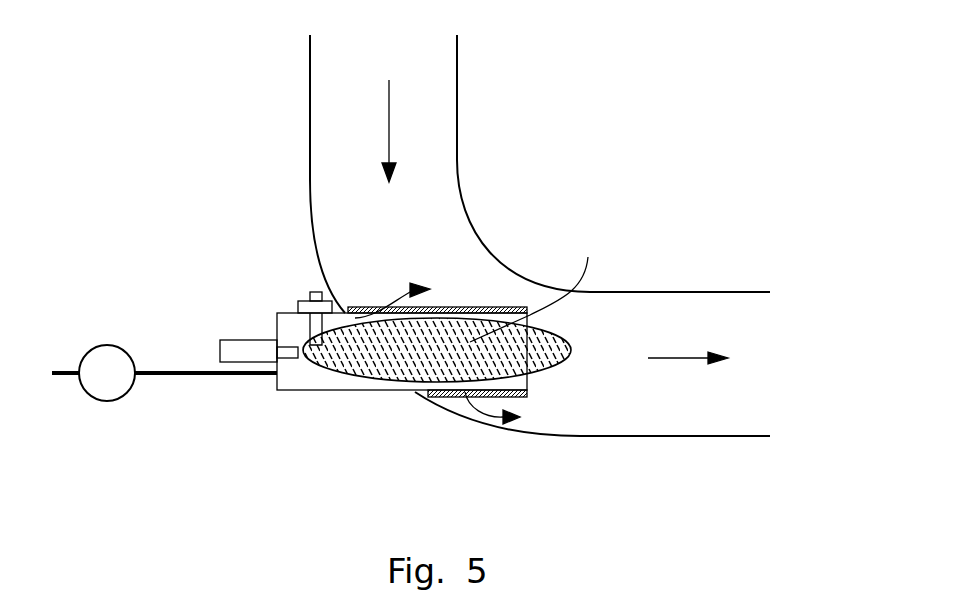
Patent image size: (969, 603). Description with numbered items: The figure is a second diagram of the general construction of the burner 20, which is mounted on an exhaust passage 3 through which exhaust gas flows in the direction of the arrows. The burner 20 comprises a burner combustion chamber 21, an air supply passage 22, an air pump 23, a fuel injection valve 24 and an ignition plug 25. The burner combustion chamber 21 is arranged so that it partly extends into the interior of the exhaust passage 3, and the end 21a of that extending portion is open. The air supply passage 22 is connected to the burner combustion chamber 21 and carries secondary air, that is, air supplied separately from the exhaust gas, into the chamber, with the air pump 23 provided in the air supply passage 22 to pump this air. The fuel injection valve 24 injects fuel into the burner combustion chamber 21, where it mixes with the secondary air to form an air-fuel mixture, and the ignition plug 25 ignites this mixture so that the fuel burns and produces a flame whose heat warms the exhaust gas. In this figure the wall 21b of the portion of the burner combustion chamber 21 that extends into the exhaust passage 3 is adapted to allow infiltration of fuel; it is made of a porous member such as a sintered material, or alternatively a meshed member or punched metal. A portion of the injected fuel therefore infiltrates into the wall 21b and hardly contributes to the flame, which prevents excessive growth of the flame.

The exhaust passage 3 is at (457, 111).
The burner 20 is at (337, 356).
The burner combustion chamber 21 is at (378, 390).
The end of the burner combustion chamber 21a is at (527, 387).
The wall of the burner combustion chamber 21b is at (483, 306).
The air supply passage 22 is at (177, 378).
The air pump 23 is at (107, 345).
The fuel injection valve 24 is at (243, 340).
The ignition plug 25 is at (312, 292).